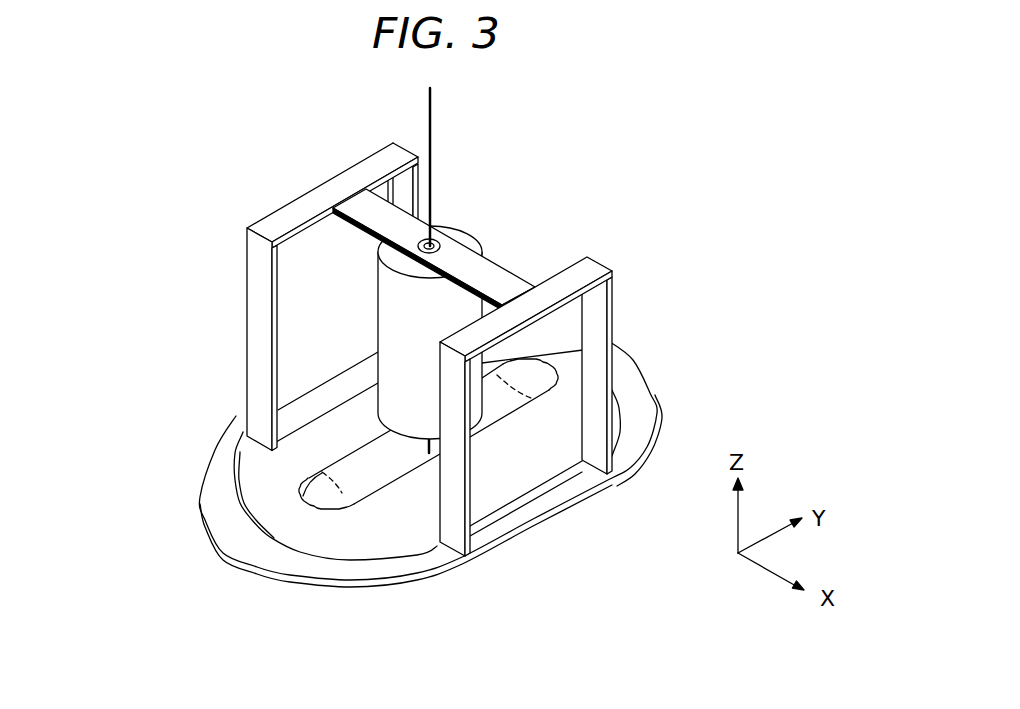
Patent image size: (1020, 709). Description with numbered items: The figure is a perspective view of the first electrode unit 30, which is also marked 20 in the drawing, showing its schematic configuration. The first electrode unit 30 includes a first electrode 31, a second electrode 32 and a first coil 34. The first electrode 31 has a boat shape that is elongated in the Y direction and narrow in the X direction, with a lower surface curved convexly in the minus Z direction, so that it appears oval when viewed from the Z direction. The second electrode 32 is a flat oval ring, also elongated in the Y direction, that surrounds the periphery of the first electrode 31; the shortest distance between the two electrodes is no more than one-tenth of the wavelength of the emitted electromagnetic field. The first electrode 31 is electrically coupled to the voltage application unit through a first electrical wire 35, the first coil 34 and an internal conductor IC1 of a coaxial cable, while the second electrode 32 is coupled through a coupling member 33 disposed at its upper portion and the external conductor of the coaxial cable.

The first electrode unit 30 is at (371, 363).
The damper unit 20 is at (371, 363).
The first electrode 31 is at (317, 492).
The second electrode 32 is at (233, 452).
The coupling member 33 is at (252, 250).
The first coil 34 is at (463, 240).
The first electrical wire 35 is at (428, 445).
The internal conductor IC1 is at (432, 123).